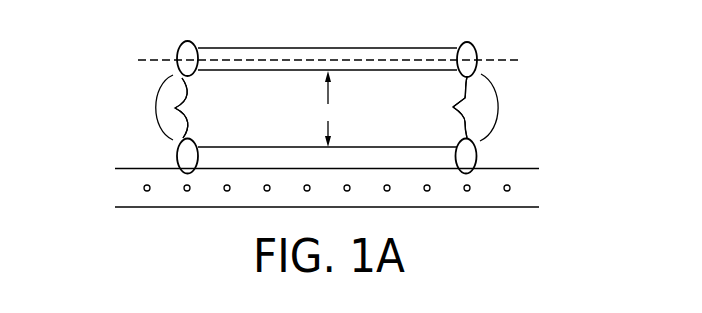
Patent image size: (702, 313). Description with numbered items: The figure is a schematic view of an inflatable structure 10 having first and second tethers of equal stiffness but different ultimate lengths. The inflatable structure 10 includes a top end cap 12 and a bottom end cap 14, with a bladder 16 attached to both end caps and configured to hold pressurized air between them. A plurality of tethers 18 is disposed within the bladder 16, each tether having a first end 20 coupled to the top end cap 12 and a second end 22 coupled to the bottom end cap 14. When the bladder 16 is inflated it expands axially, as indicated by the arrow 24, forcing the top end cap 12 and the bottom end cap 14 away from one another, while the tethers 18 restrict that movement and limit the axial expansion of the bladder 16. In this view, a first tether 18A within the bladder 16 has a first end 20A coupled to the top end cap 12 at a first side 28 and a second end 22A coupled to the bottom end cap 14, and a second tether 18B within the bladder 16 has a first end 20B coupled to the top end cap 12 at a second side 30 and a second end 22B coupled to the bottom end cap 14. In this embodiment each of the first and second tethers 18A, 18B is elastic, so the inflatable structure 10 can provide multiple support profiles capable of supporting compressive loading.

The inflatable structure 10 is at (122, 229).
The top end cap 12 is at (285, 57).
The bottom end cap 14 is at (395, 160).
The bladder 16 is at (158, 103).
The tethers 18 is at (328, 107).
The first tether 18A is at (177, 113).
The second tether 18B is at (465, 99).
The first end 20 is at (330, 84).
The first end of first tether 20A is at (183, 80).
The first end of second tether 20B is at (468, 80).
The second end 22 is at (330, 135).
The second end of first tether 22A is at (182, 140).
The second end of second tether 22B is at (467, 135).
The arrow 24 is at (327, 109).
The first side 28 is at (199, 60).
The second side 30 is at (457, 60).